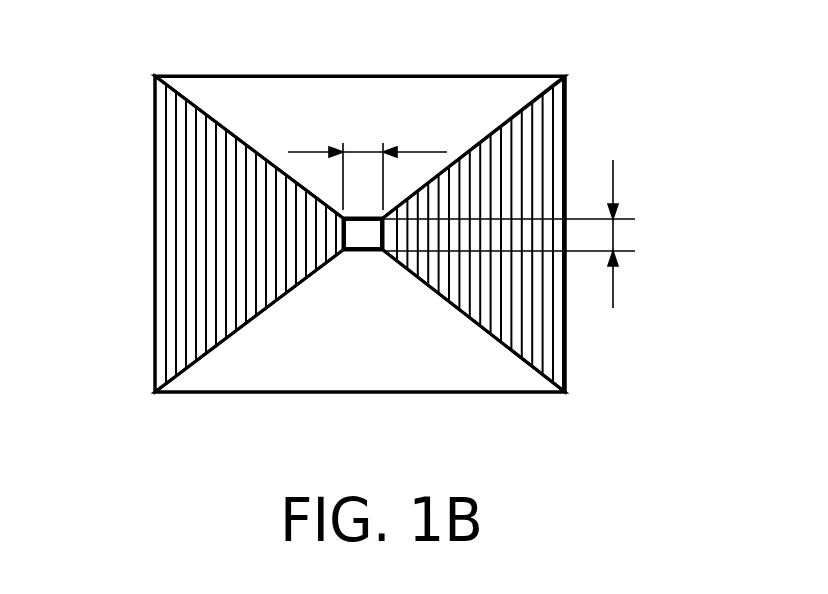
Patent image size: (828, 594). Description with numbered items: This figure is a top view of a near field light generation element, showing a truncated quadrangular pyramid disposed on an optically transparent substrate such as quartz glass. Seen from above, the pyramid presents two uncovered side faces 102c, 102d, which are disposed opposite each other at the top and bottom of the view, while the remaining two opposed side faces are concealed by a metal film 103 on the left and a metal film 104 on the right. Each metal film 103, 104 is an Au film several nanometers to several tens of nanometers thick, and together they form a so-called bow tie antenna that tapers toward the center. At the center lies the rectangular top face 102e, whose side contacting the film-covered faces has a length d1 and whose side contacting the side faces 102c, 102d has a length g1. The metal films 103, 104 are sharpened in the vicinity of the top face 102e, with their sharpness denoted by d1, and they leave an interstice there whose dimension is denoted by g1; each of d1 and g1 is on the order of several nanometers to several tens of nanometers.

The side face 102c is at (272, 118).
The side face 102d is at (422, 362).
The top face 102e is at (367, 240).
The metal film 103 is at (232, 230).
The metal film 104 is at (533, 158).
The interstice dimension g1 is at (367, 156).
The sharpness dimension d1 is at (531, 234).